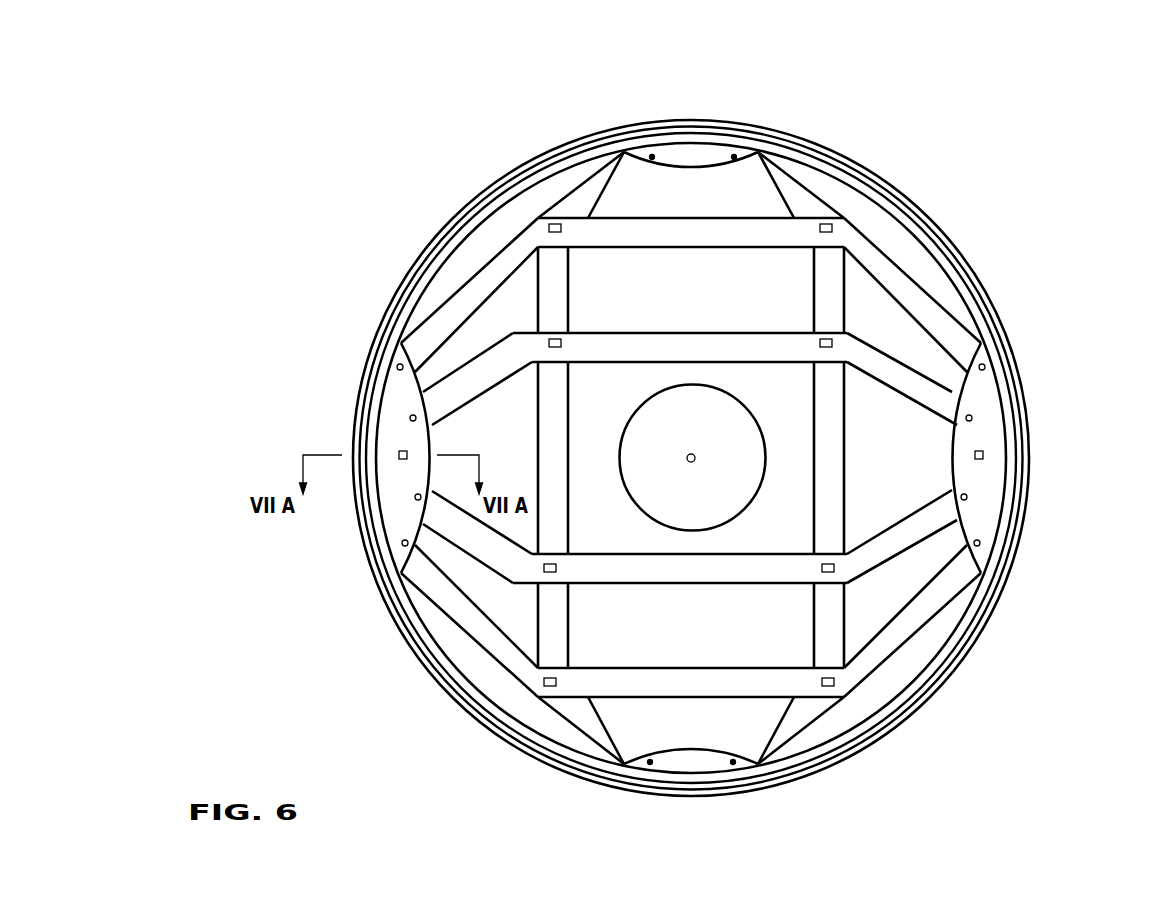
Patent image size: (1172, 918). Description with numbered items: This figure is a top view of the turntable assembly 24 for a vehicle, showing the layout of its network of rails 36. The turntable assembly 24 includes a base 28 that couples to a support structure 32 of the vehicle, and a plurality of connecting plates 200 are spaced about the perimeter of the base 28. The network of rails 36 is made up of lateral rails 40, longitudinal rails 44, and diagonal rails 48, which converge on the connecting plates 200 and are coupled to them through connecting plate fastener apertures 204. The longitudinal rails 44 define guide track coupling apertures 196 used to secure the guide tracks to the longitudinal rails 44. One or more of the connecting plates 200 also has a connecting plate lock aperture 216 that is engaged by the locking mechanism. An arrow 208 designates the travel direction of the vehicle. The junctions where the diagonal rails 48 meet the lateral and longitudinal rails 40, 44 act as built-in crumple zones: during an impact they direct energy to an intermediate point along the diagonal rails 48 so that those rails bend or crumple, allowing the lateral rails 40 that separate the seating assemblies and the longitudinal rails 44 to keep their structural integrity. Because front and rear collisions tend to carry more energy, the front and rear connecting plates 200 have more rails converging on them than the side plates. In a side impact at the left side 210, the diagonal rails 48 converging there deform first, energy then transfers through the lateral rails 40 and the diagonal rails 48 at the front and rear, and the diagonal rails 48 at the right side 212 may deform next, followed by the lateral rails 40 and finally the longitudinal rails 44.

The turntable assembly 24 is at (1047, 265).
The base 28 is at (557, 167).
The support structure 32 is at (490, 182).
The network of rails 36 is at (813, 278).
The lateral rails 40 is at (550, 632).
The longitudinal rails 44 is at (602, 237).
The diagonal rails 48 is at (567, 202).
The guide track coupling apertures 196 is at (550, 570).
The connecting plates 200 is at (693, 160).
The connecting plate fastener apertures 204 is at (410, 418).
The arrow 208 is at (297, 393).
The left side 210 is at (670, 797).
The right side 212 is at (627, 248).
The connecting plate lock aperture 216 is at (399, 455).